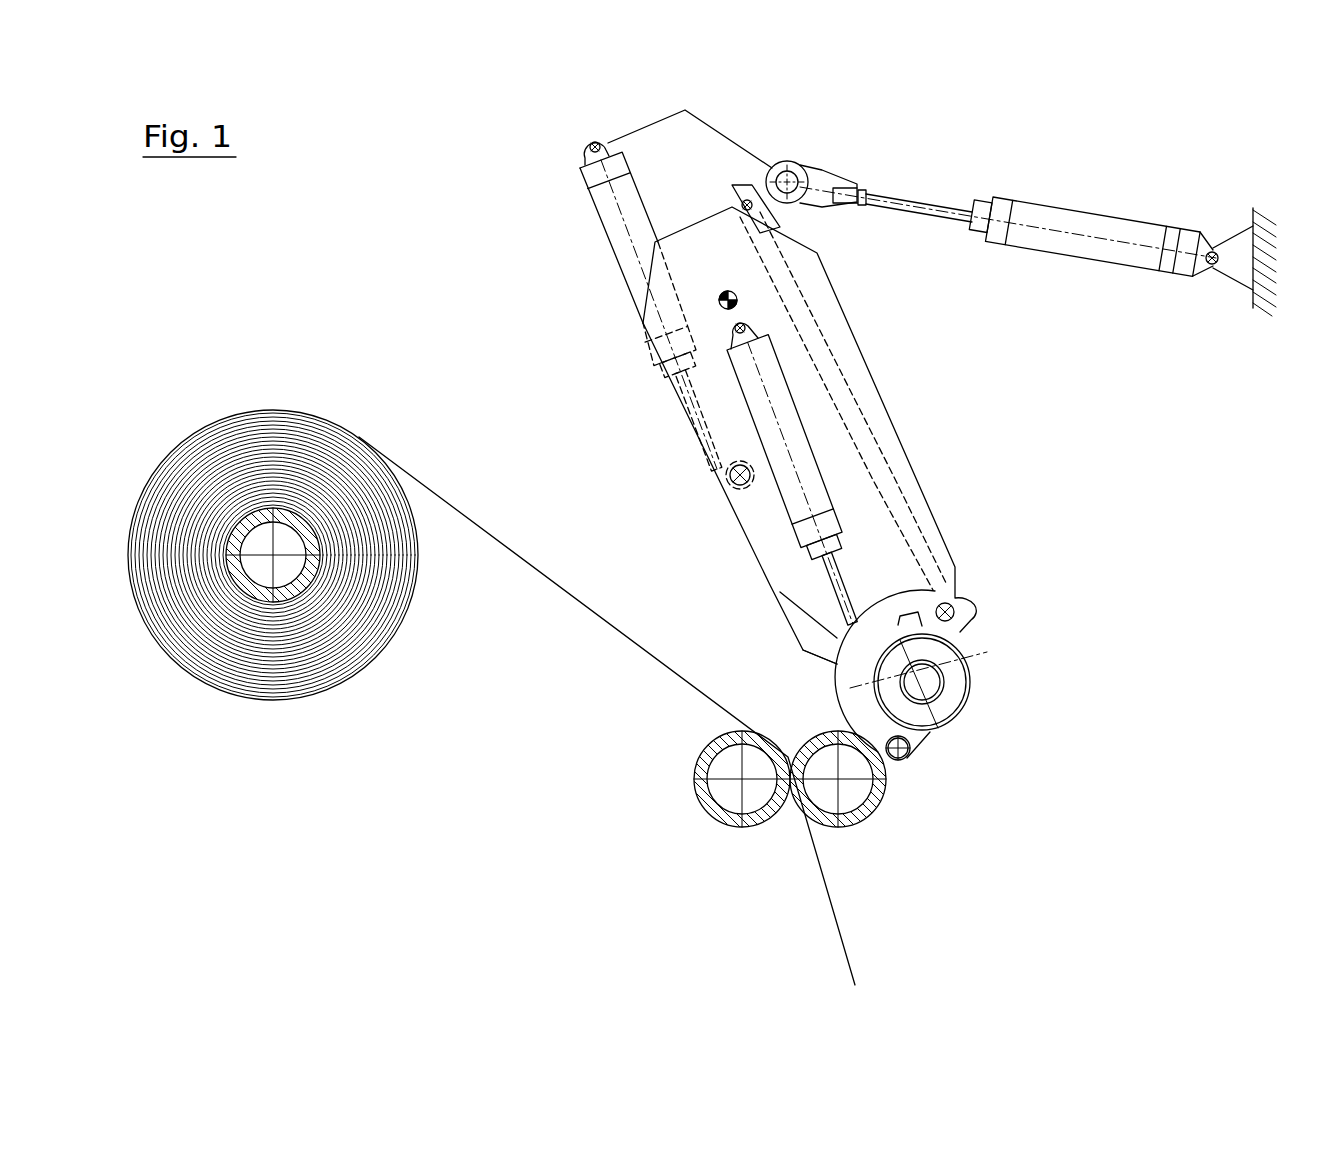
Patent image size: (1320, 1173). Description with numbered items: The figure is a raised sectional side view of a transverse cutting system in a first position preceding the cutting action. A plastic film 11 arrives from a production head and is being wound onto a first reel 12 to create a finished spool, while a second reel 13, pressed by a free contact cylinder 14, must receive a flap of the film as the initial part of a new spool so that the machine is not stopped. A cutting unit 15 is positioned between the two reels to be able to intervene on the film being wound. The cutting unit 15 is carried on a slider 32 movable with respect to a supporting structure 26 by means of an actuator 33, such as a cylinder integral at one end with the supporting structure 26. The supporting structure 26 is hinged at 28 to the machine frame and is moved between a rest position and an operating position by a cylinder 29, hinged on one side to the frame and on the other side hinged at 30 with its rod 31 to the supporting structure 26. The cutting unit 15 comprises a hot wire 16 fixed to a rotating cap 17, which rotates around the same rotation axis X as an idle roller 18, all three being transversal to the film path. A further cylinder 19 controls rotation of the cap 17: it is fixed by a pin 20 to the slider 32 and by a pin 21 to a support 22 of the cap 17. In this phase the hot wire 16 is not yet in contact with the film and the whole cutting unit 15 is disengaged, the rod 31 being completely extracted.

The plastic film 11 is at (612, 625).
The first reel 12 is at (282, 601).
The second reel 13 is at (702, 806).
The contact cylinder 14 is at (863, 818).
The cutting unit 15 is at (993, 413).
The hot wire 16 is at (955, 600).
The rotating cap 17 is at (922, 610).
The idle roller 18 is at (960, 683).
The cylinder 19 is at (747, 400).
The pin 20 is at (733, 327).
The pin 21 is at (910, 758).
The support 22 is at (842, 698).
The supporting structure 26 is at (702, 168).
The hinge 28 is at (717, 290).
The cylinder 29 is at (1093, 217).
The hinge 30 is at (800, 162).
The rod 31 is at (922, 200).
The slider 32 is at (739, 266).
The actuator 33 is at (588, 161).
The rotation axis X is at (942, 662).